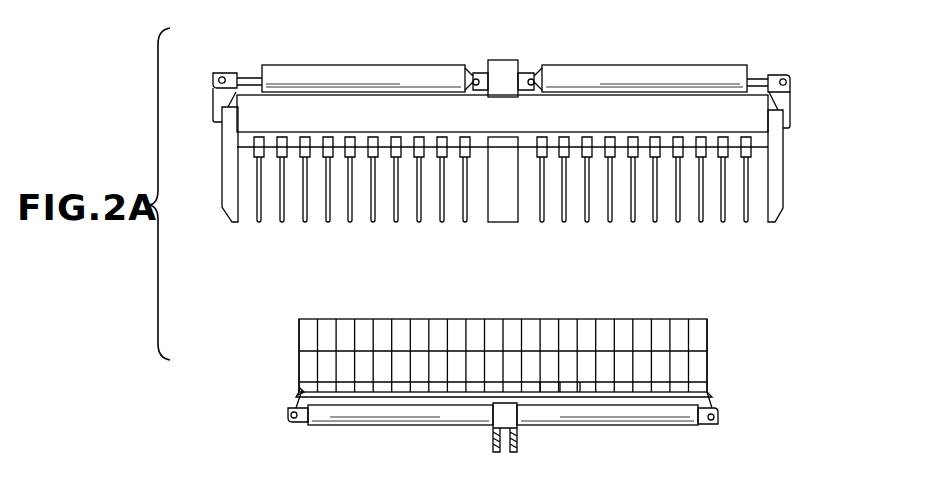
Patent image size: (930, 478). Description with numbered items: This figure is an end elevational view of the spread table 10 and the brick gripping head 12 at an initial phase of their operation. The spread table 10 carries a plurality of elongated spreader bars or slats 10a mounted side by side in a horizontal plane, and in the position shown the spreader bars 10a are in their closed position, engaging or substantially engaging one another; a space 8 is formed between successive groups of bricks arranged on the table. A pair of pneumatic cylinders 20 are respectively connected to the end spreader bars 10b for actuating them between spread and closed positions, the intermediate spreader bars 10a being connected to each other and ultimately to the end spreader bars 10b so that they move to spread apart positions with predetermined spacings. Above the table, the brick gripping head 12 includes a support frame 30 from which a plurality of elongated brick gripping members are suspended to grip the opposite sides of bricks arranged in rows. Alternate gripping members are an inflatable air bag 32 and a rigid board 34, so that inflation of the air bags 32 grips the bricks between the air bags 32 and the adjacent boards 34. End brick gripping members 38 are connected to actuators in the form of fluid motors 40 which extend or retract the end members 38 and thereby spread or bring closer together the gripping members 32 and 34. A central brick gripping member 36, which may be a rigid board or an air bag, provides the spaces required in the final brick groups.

The space 8 is at (722, 342).
The spread table 10 is at (714, 388).
The spreader bars 10a is at (568, 390).
The end spreader bars 10b is at (298, 398).
The brick gripping head 12 is at (530, 52).
The pneumatic cylinders 20 is at (392, 416).
The support frame 30 is at (598, 121).
The air bag 32 is at (419, 224).
The board 34 is at (446, 224).
The central brick gripping member 36 is at (505, 224).
The end brick gripping members 38 is at (232, 221).
The fluid motors 40 is at (415, 66).